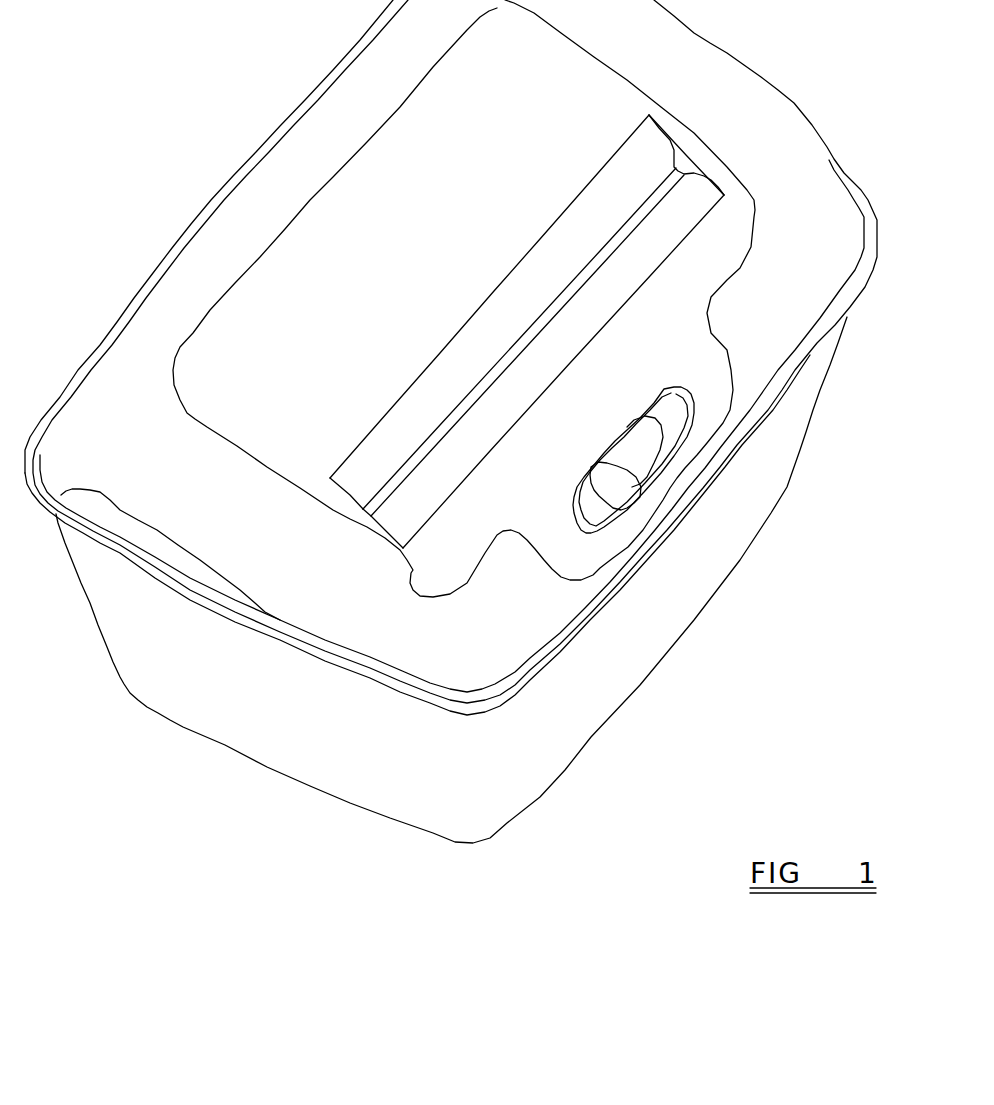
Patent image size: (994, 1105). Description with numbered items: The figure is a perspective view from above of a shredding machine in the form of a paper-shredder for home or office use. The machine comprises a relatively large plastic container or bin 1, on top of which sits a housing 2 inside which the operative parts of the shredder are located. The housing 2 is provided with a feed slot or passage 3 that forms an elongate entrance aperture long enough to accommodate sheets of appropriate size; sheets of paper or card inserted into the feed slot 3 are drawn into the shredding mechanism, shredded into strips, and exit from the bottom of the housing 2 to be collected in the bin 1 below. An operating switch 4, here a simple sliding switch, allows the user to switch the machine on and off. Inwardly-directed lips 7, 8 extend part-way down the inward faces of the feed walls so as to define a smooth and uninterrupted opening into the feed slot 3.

The container or bin 1 is at (436, 580).
The housing 2 is at (451, 421).
The feed slot or passage 3 is at (523, 560).
The operating switch 4 is at (633, 623).
The inwardly-directed lip 7 is at (534, 563).
The inwardly-directed lip 8 is at (448, 498).